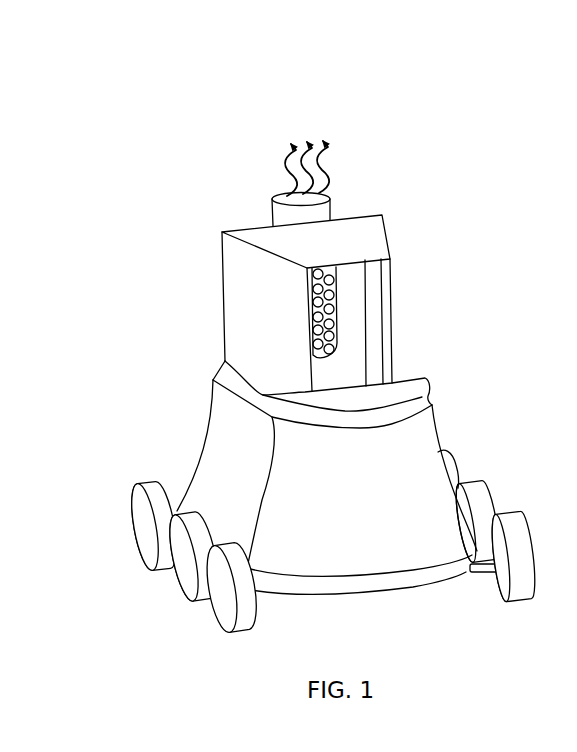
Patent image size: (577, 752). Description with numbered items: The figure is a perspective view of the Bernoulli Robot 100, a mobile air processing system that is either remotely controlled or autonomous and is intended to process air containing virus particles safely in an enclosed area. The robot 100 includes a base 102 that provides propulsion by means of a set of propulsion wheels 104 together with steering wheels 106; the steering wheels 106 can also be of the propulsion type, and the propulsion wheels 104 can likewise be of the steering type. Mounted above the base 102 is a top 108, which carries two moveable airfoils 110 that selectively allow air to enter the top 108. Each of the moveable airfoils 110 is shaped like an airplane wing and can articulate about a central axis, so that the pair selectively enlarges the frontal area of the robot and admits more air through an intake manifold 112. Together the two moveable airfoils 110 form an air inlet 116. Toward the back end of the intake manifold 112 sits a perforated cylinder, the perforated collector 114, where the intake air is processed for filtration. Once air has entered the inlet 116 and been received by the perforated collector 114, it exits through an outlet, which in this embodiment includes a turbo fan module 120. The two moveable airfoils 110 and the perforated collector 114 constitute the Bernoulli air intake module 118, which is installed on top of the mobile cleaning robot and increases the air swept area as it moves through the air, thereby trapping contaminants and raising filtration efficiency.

The Bernoulli Robot 100 is at (97, 102).
The base 102 is at (202, 452).
The propulsion wheels 104 is at (145, 485).
The steering wheels 106 is at (525, 513).
The top 108 is at (222, 280).
The moveable airfoils 110 is at (212, 296).
The intake manifold 112 is at (335, 370).
The perforated collector 114 is at (352, 283).
The air inlet 116 is at (347, 368).
The Bernoulli air intake module 118 is at (430, 295).
The turbo fan module 120 is at (274, 178).